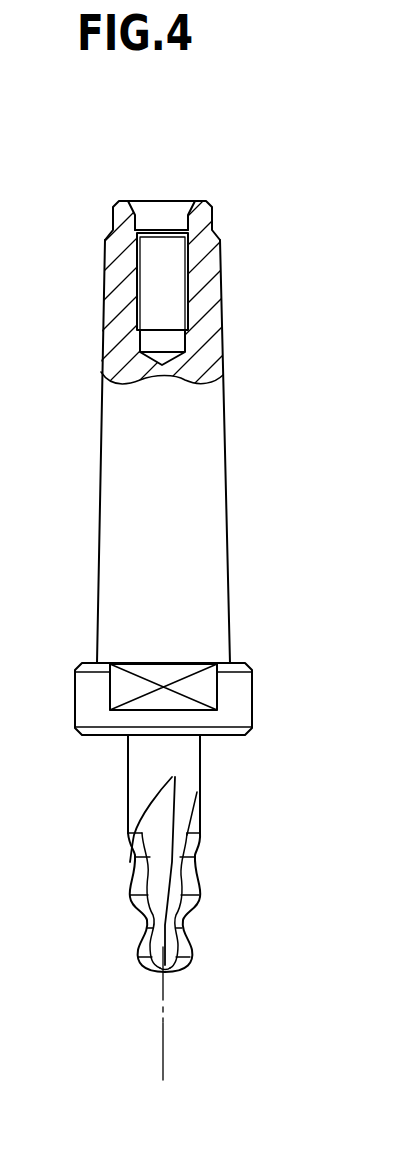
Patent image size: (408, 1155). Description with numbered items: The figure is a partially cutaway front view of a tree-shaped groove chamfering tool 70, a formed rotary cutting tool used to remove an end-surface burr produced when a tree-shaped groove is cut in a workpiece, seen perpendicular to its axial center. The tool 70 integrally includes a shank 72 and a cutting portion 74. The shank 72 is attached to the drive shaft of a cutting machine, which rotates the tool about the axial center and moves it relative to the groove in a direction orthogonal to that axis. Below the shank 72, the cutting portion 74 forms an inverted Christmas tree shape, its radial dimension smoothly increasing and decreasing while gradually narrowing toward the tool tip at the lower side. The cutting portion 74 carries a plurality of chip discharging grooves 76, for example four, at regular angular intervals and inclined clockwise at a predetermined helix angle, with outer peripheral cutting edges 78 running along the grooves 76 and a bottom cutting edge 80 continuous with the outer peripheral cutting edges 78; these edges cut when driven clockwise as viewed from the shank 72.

The tree-shaped groove chamfering tool 70 is at (282, 271).
The shank 72 is at (213, 497).
The cutting portion 74 is at (111, 1026).
The chip discharging grooves 76 is at (160, 863).
The outer peripheral cutting edges 78 is at (150, 910).
The bottom cutting edge 80 is at (166, 972).